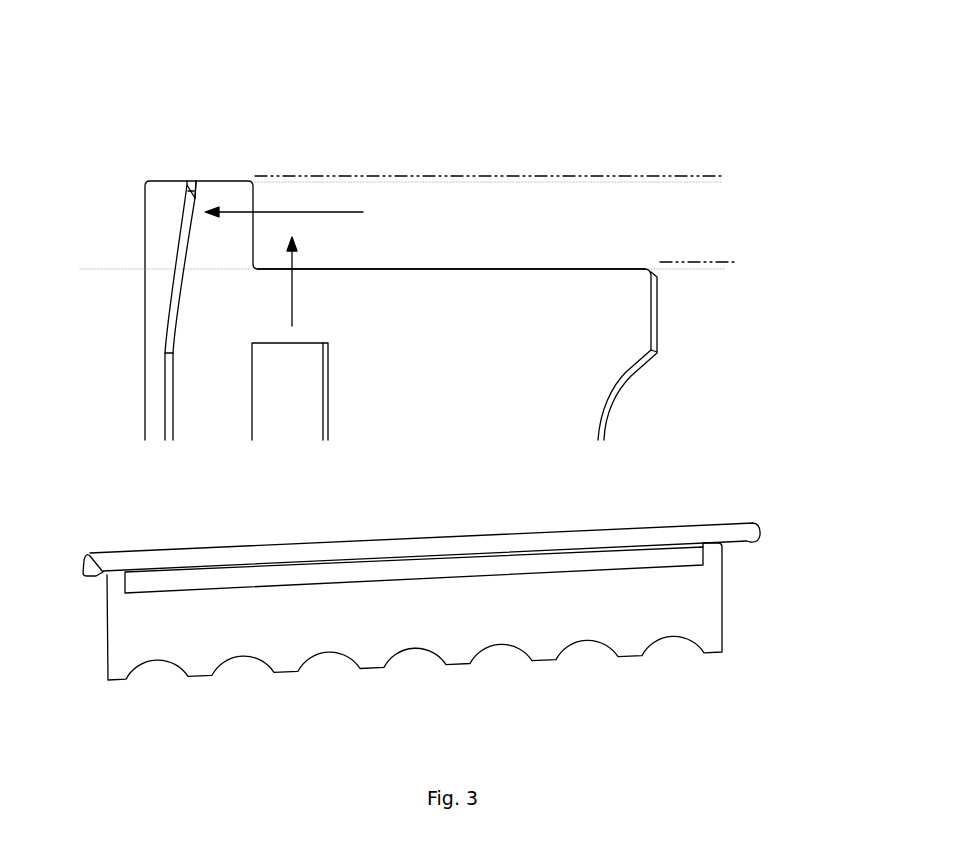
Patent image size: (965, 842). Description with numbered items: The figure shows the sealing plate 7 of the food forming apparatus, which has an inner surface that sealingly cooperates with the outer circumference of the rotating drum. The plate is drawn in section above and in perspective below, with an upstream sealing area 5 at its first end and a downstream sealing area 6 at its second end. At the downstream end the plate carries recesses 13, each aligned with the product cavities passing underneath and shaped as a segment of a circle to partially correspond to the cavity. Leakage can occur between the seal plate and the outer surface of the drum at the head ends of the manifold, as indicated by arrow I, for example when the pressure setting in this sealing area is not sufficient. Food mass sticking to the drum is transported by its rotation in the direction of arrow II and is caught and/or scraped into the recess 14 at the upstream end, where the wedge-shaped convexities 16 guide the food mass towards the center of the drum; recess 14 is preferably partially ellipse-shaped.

The upstream sealing area 5 is at (773, 545).
The downstream sealing area 6 is at (737, 660).
The sealing plate 7 is at (489, 265).
The recess in downstream sealing area 13 is at (620, 330).
The recess in upstream sealing area 14 is at (195, 213).
The wedge in recess upstream sealing area 16 is at (182, 175).
The arrow I is at (313, 293).
The arrow II is at (338, 195).